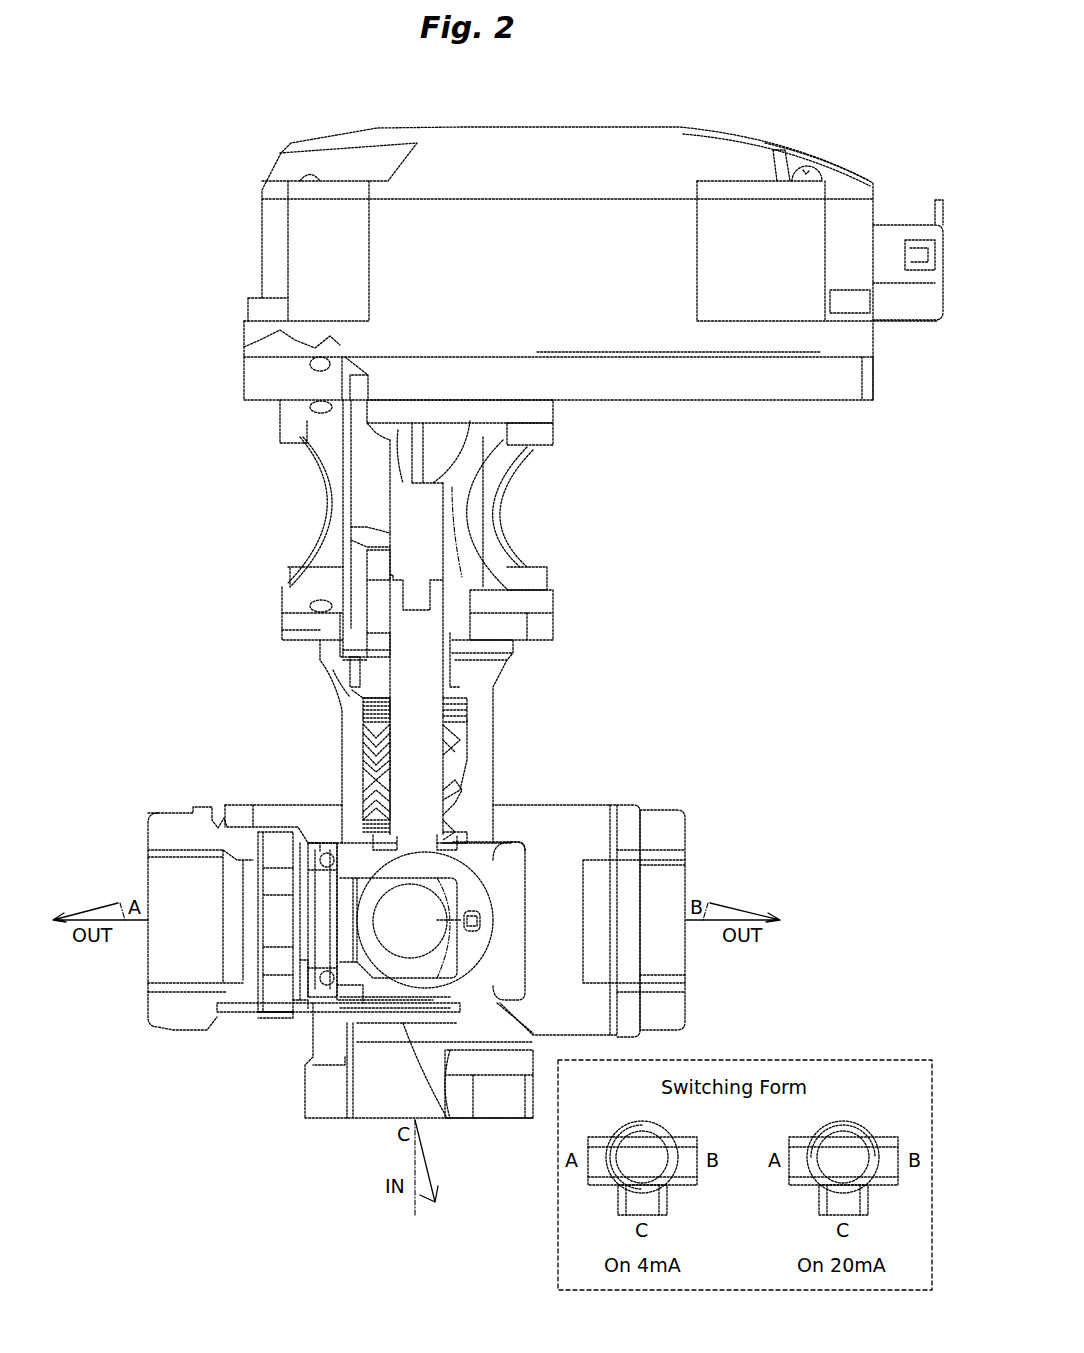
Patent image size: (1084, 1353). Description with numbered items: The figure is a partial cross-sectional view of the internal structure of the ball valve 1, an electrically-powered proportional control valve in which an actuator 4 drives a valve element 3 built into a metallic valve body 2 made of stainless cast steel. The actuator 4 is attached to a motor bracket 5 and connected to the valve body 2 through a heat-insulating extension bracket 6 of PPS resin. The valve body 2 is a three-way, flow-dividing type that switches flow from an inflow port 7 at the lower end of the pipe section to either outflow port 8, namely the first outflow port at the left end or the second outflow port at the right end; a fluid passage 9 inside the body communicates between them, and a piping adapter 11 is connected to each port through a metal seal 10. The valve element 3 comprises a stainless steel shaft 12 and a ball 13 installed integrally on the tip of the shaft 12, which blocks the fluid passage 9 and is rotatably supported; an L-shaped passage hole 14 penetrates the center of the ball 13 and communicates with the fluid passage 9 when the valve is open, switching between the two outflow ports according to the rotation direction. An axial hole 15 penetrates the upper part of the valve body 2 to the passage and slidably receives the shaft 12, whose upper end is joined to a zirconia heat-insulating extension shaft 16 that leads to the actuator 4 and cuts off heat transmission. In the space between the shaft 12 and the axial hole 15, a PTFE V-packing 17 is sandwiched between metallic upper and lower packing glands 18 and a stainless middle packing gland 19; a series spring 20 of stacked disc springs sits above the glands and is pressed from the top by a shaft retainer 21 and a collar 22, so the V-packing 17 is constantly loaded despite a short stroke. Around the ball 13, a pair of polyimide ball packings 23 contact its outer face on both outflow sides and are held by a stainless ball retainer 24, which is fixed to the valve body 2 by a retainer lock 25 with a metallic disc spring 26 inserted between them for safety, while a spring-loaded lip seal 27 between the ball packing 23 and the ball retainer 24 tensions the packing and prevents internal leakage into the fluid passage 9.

The ball valve 1 is at (193, 692).
The valve body 2 is at (597, 805).
The valve element 3 is at (552, 710).
The actuator 4 is at (262, 240).
The motor bracket 5 is at (244, 374).
The heat-insulating extension bracket 6 is at (330, 478).
The inflow port 7 is at (435, 1118).
The outflow port 8 is at (243, 940).
The fluid passage 9 is at (322, 920).
The metal seal 10 is at (230, 1018).
The piping adapter 11 is at (148, 832).
The shaft 12 is at (430, 785).
The ball 13 is at (455, 850).
The passage hole 14 is at (425, 920).
The axial hole 15 is at (370, 795).
The heat-insulating extension shaft 16 is at (415, 532).
The V-packing 17 is at (380, 745).
The upper and lower packing glands 18 is at (380, 730).
The middle packing gland 19 is at (380, 775).
The series spring 20 is at (350, 697).
The shaft retainer 21 is at (375, 665).
The collar 22 is at (380, 577).
The ball packing 23 is at (355, 985).
The ball retainer 24 is at (300, 1005).
The retainer lock 25 is at (315, 965).
The disc spring 26 is at (275, 988).
The lip seal 27 is at (320, 843).